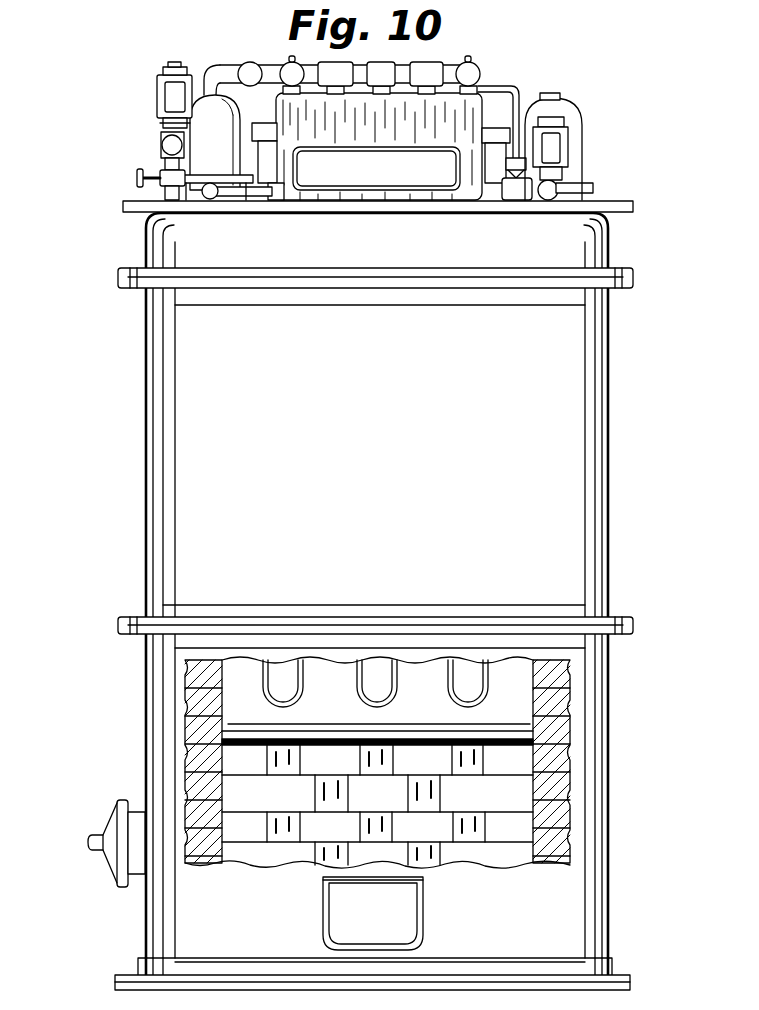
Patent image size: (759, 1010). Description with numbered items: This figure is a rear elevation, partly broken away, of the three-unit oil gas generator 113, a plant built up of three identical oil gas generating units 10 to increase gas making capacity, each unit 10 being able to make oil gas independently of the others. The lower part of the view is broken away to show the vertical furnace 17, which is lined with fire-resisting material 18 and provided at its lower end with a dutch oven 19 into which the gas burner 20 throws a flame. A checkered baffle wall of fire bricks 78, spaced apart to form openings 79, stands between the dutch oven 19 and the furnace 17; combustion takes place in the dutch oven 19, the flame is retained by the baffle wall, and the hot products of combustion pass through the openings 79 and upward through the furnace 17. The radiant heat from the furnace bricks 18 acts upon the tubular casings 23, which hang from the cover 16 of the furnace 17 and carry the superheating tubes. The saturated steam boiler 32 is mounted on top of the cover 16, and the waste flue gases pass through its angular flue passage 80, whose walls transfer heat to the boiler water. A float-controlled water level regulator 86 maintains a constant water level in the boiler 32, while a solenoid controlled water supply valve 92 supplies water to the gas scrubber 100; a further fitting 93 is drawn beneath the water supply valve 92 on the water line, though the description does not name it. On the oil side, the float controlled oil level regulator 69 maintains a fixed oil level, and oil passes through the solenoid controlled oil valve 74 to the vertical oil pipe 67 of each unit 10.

The oil gas generating unit 10 is at (272, 118).
The cover 16 is at (567, 252).
The furnace 17 is at (512, 718).
The fire-resisting material 18 is at (560, 680).
The dutch oven 19 is at (540, 812).
The gas burner 20 is at (88, 841).
The tubular casing 23 is at (304, 695).
The saturated steam boiler 32 is at (457, 110).
The oil pipe 67 is at (518, 106).
The float controlled oil level regulator 69 is at (580, 98).
The solenoid controlled oil valve 74 is at (565, 158).
The fire bricks 78 is at (412, 793).
The openings 79 is at (377, 793).
The angular flue passage 80 is at (376, 168).
The float-controlled water level regulator 86 is at (201, 95).
The solenoid controlled water supply valve 92 is at (172, 100).
The gauge 93 is at (161, 145).
The gas scrubber 100 is at (633, 212).
The 3-unit oil gas generator 113 is at (132, 700).